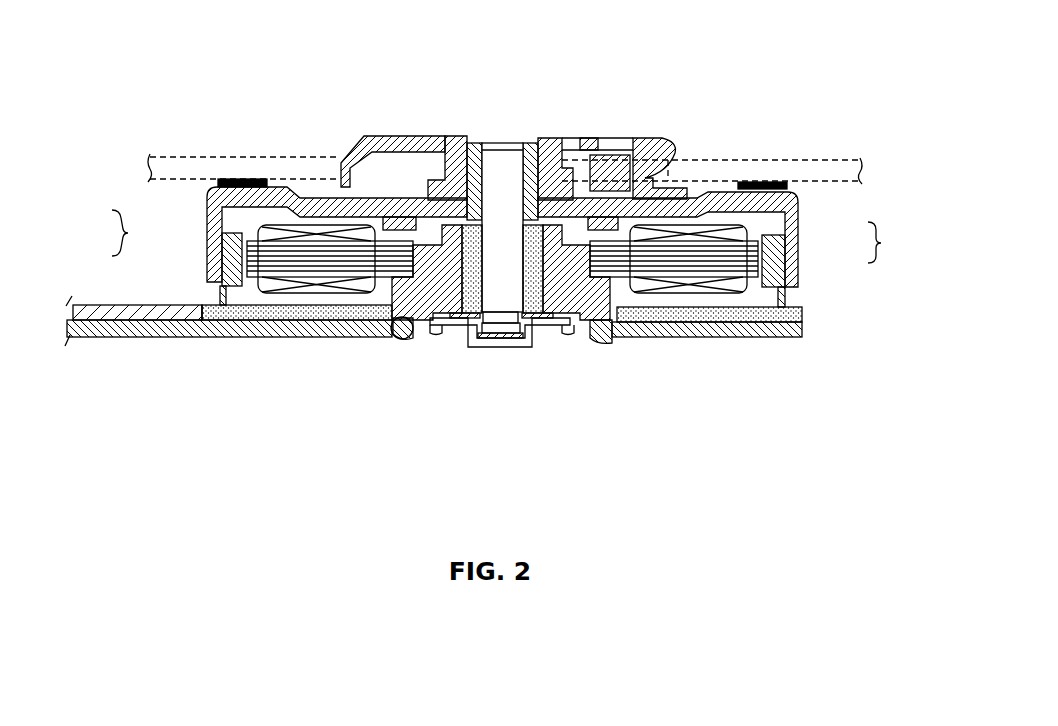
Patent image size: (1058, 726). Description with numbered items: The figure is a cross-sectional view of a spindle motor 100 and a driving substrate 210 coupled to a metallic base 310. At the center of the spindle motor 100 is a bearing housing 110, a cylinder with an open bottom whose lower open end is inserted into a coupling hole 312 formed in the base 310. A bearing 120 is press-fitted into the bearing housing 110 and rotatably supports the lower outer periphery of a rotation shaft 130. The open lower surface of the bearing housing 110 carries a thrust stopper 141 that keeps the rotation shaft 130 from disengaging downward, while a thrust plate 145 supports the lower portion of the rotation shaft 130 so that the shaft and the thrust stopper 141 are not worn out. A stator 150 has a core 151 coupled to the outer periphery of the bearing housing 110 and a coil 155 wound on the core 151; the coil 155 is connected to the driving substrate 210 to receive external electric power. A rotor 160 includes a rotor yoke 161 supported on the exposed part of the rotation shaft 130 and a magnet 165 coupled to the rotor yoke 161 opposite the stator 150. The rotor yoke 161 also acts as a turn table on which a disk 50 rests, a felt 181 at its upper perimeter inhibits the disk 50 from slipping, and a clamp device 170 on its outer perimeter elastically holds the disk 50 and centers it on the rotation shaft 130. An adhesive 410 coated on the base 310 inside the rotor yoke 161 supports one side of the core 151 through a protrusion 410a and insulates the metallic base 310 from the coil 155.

The disk 50 is at (190, 165).
The felt 181 is at (242, 176).
The rotation shaft 130 is at (497, 166).
The clamp device 170 is at (550, 140).
The spindle motor 100 is at (694, 146).
The stator 150 is at (99, 233).
The coil 155 is at (266, 232).
The core 151 is at (262, 262).
The rotor yoke 161 is at (792, 220).
The magnet 165 is at (790, 256).
The rotor 160 is at (893, 242).
The driving substrate 210 is at (138, 338).
The protrusion 410a is at (206, 300).
The adhesive 410 is at (263, 314).
The coupling hole 312 is at (392, 338).
The bearing housing 110 is at (422, 307).
The thrust plate 145 is at (498, 343).
The thrust stopper 141 is at (518, 350).
The bearing 120 is at (531, 314).
The base 310 is at (760, 338).